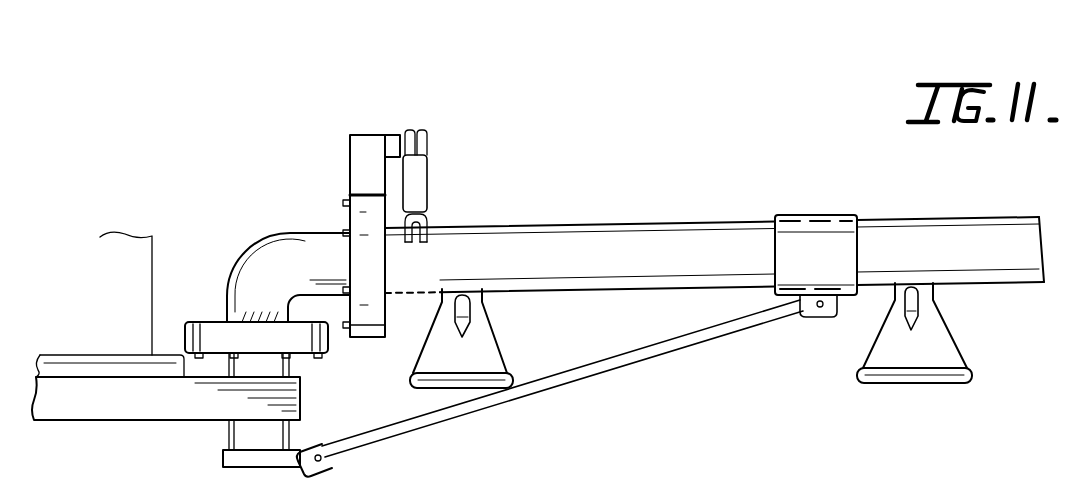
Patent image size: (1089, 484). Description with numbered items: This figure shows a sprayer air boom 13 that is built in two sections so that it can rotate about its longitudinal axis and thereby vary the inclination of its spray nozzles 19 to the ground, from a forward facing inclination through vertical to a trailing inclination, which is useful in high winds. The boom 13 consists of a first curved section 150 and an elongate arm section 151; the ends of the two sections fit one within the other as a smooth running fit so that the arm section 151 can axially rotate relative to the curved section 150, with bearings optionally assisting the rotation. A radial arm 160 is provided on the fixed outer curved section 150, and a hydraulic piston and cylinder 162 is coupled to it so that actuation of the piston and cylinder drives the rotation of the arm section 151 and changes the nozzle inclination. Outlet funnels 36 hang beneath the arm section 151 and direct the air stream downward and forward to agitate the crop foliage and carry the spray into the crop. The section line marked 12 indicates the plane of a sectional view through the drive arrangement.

The section line 12- 12 is at (440, 292).
The boom 13 is at (643, 236).
The spray nozzles 19 is at (470, 315).
The outlet funnel 36 is at (500, 382).
The first curved section 150 is at (268, 255).
The elongate arm section 151 is at (480, 258).
The radial arm 160 is at (368, 150).
The hydraulic piston and cylinder 162 is at (412, 178).